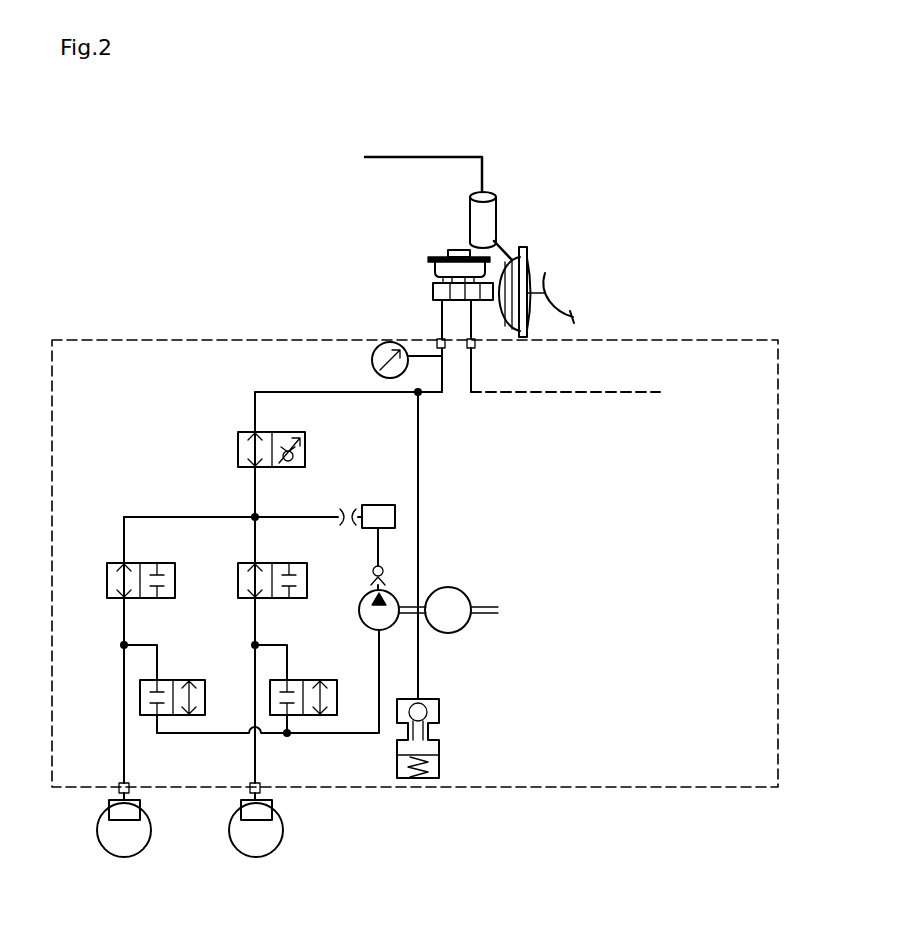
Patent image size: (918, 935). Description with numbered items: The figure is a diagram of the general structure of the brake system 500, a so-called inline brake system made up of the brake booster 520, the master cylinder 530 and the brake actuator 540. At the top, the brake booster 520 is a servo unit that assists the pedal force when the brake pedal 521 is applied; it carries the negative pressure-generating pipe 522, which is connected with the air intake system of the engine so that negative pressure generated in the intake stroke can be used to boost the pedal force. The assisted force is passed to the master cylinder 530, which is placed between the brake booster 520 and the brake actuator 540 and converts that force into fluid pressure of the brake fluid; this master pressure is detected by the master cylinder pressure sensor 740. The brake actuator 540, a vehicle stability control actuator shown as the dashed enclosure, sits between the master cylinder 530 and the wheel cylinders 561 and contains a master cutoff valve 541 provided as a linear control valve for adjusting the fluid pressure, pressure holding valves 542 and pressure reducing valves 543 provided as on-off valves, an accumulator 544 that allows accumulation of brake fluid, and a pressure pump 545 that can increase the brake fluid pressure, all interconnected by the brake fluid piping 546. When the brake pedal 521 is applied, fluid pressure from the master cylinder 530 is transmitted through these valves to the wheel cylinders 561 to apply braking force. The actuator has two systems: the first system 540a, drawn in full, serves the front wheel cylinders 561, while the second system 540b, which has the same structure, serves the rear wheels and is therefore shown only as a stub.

The brake system 500 is at (706, 176).
The brake booster 520 is at (527, 262).
The brake pedal 521 is at (575, 313).
The negative pressure-generating pipe 522 is at (485, 203).
The master cylinder 530 is at (433, 292).
The brake actuator 540 is at (122, 338).
The first system 540a is at (134, 400).
The second system 540b is at (698, 400).
The master cutoff valve 541 is at (238, 446).
The pressure holding valve 542 is at (113, 562).
The pressure reducing valve 543 is at (189, 679).
The accumulator 544 is at (440, 748).
The pressure pump 545 is at (451, 587).
The brake fluid piping 546 is at (275, 390).
The wheel cylinder 561 is at (118, 789).
The master cylinder pressure sensor 740 is at (372, 350).